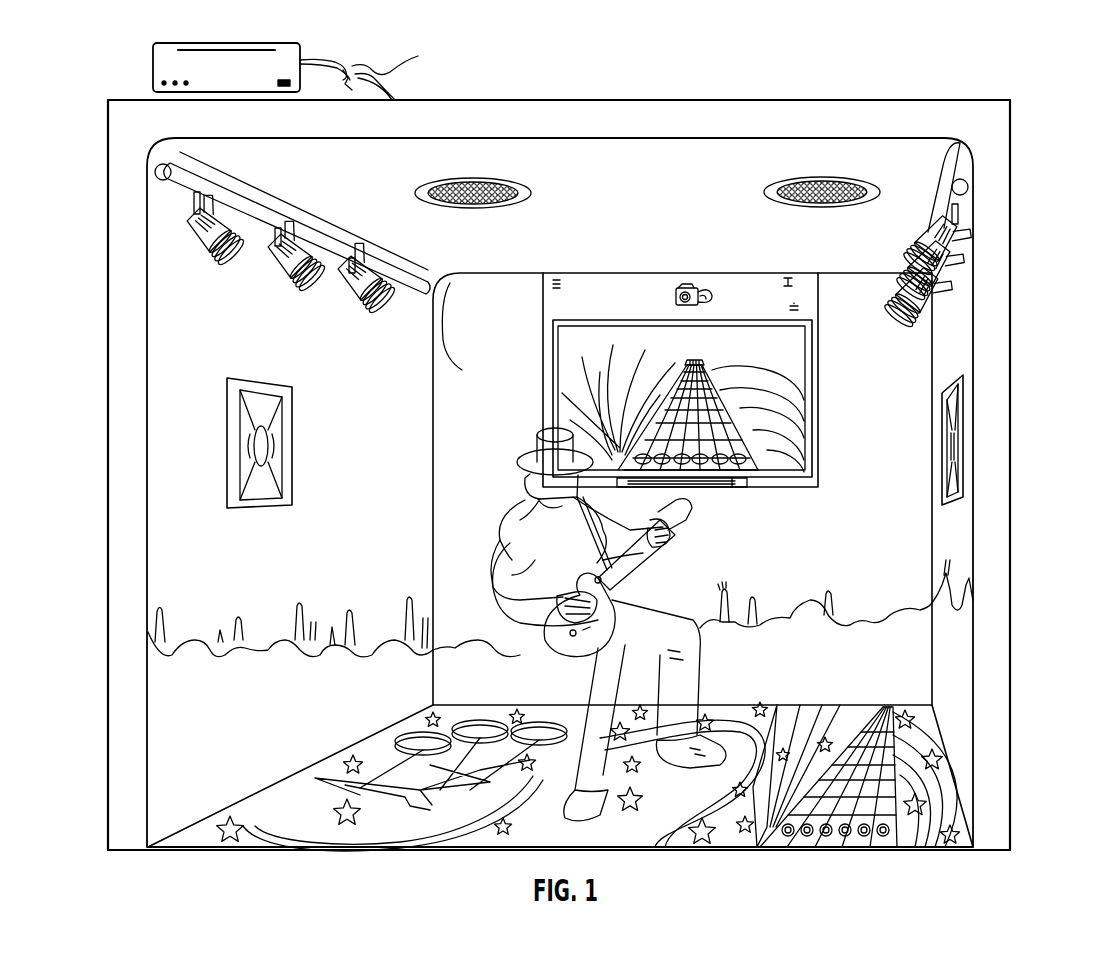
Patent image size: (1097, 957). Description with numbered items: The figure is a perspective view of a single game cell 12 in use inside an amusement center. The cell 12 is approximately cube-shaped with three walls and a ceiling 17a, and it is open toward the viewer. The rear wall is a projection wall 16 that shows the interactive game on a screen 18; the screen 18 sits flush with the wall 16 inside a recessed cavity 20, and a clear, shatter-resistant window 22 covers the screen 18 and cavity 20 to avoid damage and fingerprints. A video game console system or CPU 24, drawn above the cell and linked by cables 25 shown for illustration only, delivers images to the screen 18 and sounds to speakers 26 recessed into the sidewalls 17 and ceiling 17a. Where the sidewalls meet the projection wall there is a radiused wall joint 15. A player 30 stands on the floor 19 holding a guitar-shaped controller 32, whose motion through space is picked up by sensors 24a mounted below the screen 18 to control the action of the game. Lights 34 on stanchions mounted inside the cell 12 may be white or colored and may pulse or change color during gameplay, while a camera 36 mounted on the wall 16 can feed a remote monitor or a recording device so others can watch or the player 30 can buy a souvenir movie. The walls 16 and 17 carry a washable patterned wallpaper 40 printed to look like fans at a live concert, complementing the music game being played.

The game cell 12 is at (1010, 168).
The radiused wall joint 15 is at (463, 333).
The projection wall 16 is at (492, 323).
The sidewalls 17 is at (365, 444).
The ceiling 17a is at (575, 251).
The screen 18 is at (793, 357).
The floor 19 is at (622, 848).
The recessed cavity 20 is at (818, 300).
The clear window 22 is at (588, 311).
The video game console system and/or CPU 24 is at (153, 62).
The sensors 24a is at (745, 488).
The cables 25 is at (428, 70).
The speakers 26 is at (470, 208).
The player 30 is at (507, 527).
The controller 32 is at (633, 563).
The lights 34 is at (285, 268).
The cameras 36 is at (680, 286).
The patterned wallpaper 40 is at (228, 695).